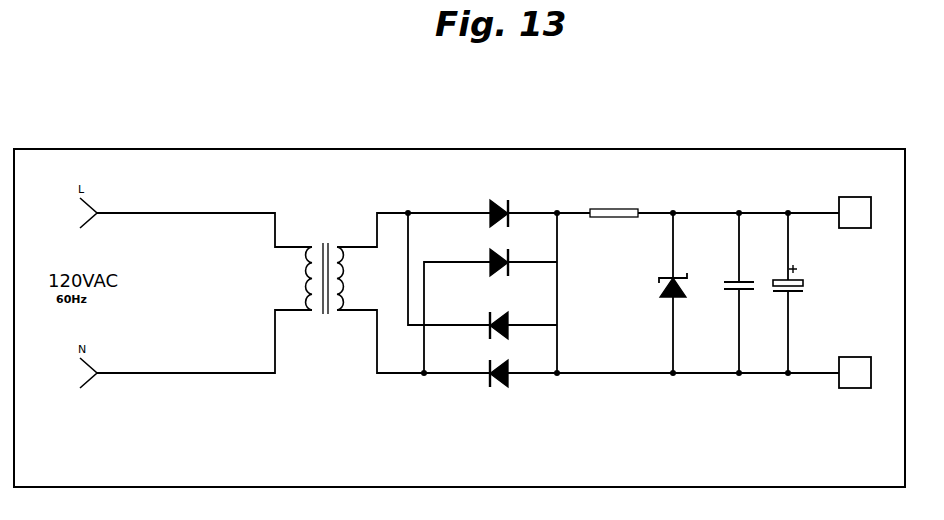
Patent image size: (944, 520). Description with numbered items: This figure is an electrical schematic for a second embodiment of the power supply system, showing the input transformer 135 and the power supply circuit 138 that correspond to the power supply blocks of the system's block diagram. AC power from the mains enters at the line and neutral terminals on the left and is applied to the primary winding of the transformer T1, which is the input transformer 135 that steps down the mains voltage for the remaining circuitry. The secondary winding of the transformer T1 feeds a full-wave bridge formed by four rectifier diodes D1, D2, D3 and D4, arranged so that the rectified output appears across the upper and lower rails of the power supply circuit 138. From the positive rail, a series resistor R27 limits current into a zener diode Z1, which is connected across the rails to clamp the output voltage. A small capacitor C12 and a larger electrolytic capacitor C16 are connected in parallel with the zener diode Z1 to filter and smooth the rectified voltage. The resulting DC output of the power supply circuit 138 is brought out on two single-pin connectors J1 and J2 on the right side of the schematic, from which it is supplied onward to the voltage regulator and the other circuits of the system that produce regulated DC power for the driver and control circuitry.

The input transformer 135 is at (317, 338).
The power supply circuit 138 is at (756, 340).
The transformer T1 is at (325, 280).
The rectifier diode D1 is at (510, 211).
The rectifier diode D2 is at (510, 262).
The rectifier diode D3 is at (510, 324).
The rectifier diode D4 is at (510, 376).
The resistor R27 is at (620, 214).
The zener diode Z1 is at (686, 293).
The capacitor C12 is at (750, 293).
The electrolytic capacitor C16 is at (813, 293).
The connector J1 is at (854, 212).
The connector J2 is at (854, 372).